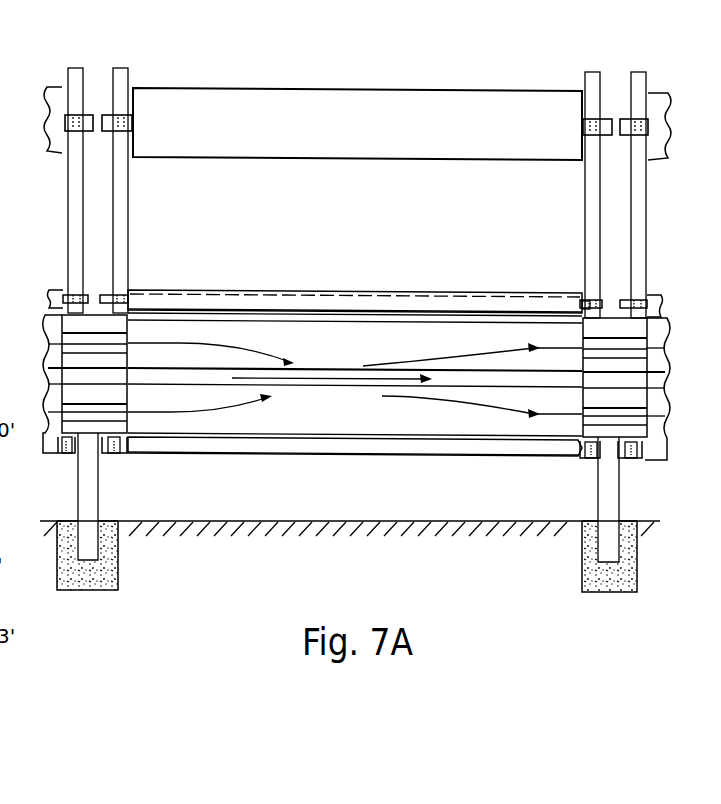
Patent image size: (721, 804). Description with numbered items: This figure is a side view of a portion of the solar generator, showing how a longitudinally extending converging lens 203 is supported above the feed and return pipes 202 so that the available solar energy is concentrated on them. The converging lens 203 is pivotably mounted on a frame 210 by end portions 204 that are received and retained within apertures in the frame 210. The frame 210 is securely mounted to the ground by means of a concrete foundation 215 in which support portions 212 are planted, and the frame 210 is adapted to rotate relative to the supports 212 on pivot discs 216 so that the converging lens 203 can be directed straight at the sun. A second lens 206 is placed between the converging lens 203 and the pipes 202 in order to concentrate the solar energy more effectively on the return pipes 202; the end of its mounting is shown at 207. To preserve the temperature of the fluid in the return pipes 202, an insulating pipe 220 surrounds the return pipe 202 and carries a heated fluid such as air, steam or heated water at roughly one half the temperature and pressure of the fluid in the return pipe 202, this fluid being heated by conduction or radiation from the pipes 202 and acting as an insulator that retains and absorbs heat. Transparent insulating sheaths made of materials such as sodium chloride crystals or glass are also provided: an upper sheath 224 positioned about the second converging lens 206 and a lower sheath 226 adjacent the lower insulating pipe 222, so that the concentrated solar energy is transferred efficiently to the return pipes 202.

The return pipe 202 is at (653, 380).
The converging lens 203 is at (345, 100).
The end portion 204 is at (108, 120).
The second lens 206 is at (447, 305).
The shaft end bearing 207 is at (590, 302).
The frame 210 is at (122, 82).
The support portion 212 is at (93, 512).
The concrete foundation 215 is at (118, 568).
The pivot disc 216 is at (72, 292).
The insulating pipe 220 is at (283, 320).
The lower insulating pipe 222 is at (398, 420).
The upper insulating sheath 224 is at (355, 292).
The lower insulating sheath 226 is at (325, 445).